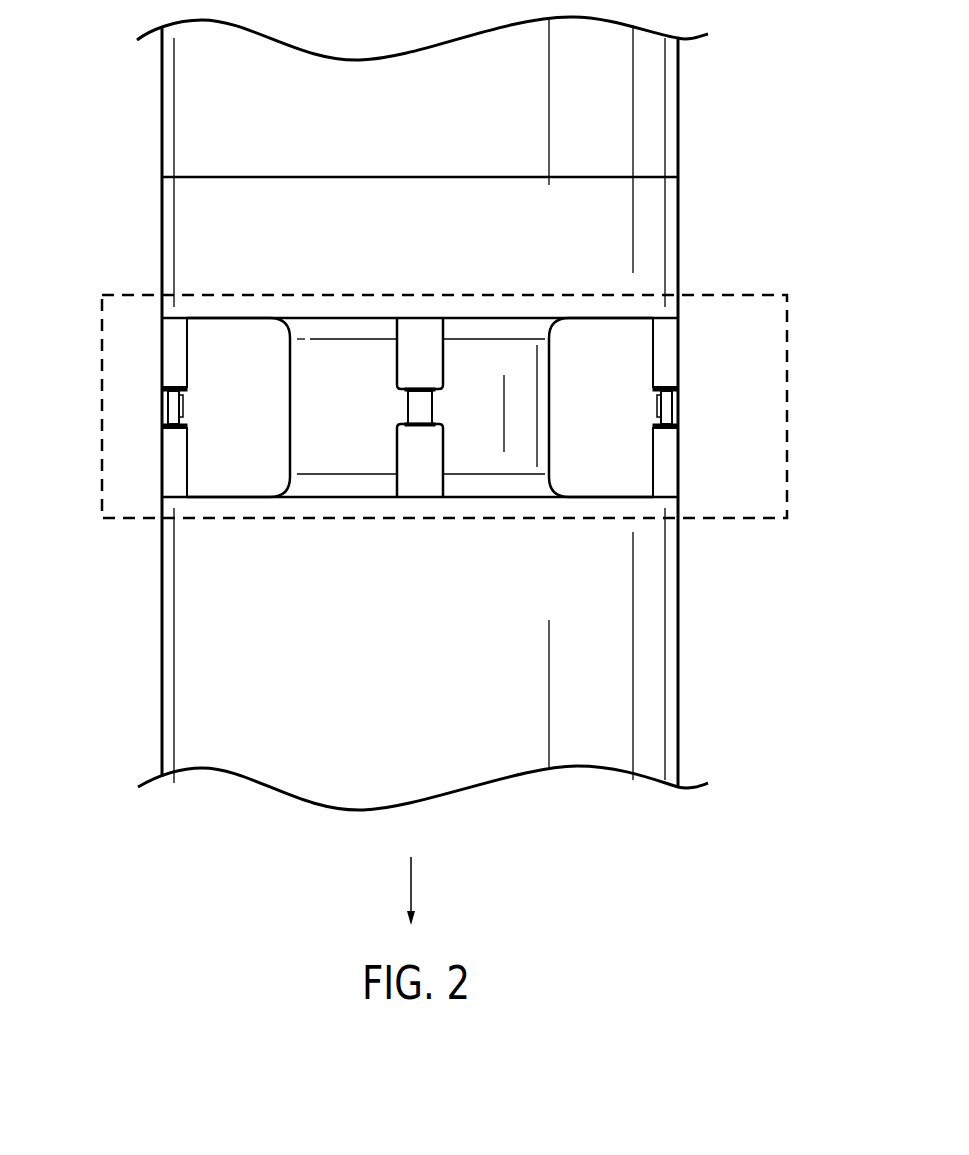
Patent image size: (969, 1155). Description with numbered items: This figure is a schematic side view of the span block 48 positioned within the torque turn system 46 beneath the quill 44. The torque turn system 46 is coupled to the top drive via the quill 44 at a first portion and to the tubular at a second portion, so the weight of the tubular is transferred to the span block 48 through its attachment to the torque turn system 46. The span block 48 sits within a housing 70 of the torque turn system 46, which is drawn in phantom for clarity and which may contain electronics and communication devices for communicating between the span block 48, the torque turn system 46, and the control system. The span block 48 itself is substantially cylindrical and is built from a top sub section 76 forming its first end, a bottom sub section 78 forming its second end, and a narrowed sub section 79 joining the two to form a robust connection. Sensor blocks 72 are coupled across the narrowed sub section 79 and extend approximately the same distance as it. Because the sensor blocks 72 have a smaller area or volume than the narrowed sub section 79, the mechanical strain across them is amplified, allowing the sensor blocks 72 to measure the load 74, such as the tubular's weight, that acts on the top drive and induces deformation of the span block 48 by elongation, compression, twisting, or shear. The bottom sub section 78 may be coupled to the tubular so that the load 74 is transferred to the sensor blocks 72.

The quill 44 is at (647, 133).
The torque turn system 46 is at (757, 73).
The span block 48 is at (752, 248).
The housing 70 is at (101, 407).
The sensor blocks 72 is at (708, 413).
The load 74 is at (412, 885).
The top sub section 76 is at (185, 240).
The bottom sub section 78 is at (678, 643).
The narrowed sub section 79 is at (549, 405).